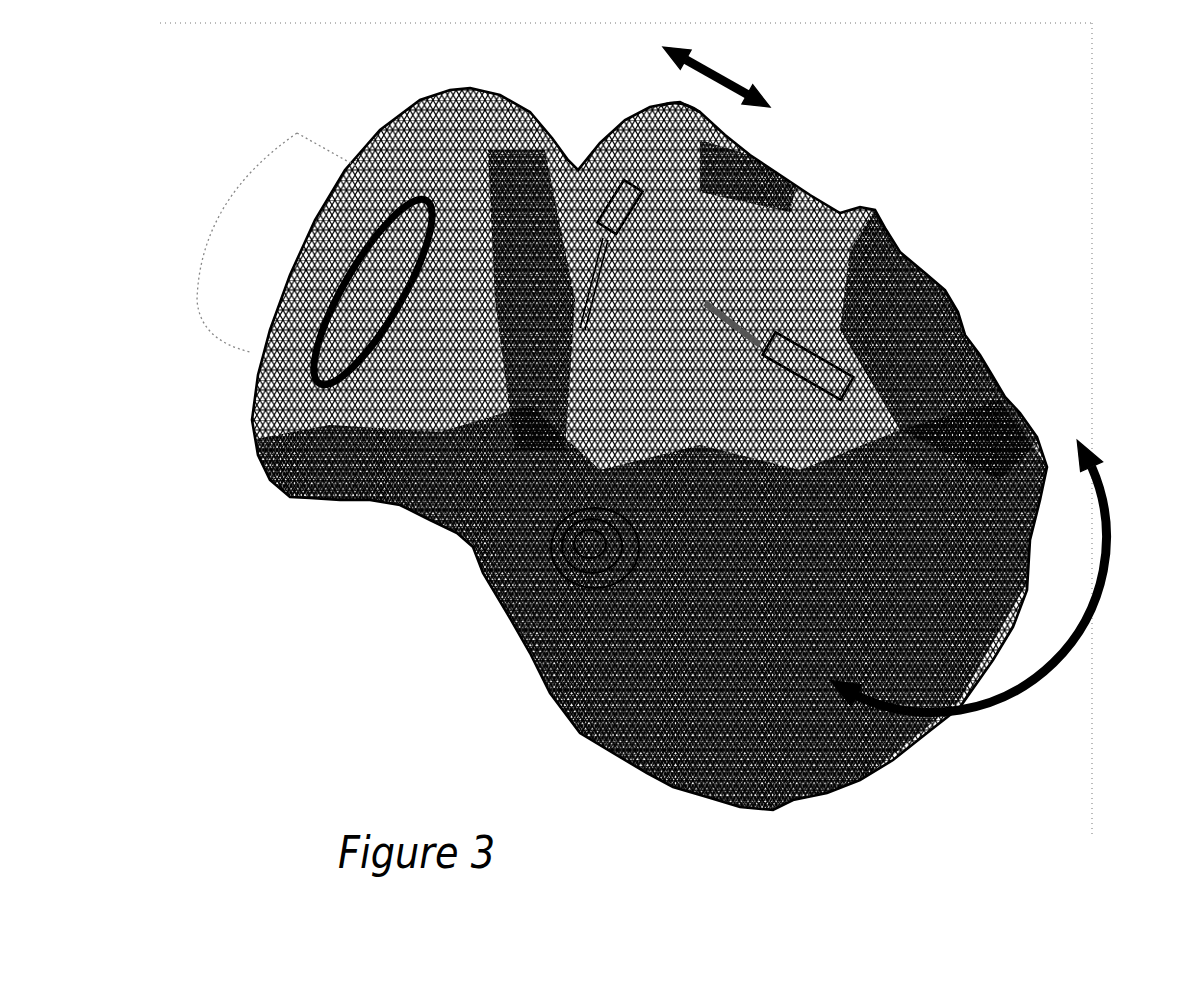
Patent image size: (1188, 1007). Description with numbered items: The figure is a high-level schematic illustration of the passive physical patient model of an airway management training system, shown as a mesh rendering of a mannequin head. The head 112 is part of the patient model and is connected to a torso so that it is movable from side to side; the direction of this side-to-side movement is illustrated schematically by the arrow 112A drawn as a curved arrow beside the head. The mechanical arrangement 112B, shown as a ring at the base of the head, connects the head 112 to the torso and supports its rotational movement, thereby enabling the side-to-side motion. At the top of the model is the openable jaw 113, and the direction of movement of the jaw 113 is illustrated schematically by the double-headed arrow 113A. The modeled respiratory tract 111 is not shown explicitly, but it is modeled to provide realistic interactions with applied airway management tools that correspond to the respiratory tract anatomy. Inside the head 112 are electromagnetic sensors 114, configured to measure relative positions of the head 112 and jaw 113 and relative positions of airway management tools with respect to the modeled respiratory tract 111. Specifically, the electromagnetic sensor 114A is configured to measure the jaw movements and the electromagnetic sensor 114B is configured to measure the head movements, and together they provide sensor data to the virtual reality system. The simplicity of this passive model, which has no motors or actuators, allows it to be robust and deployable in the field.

The modeled respiratory tract 111 is at (510, 255).
The head 112 is at (1003, 397).
The arrow 112A is at (1093, 608).
The mechanical arrangement 112B is at (317, 348).
The openable jaw 113 is at (681, 102).
The arrow 113A is at (730, 73).
The electromagnetic sensors 114 is at (762, 241).
The electromagnetic sensor 114A is at (600, 262).
The electromagnetic sensor 114B is at (812, 375).